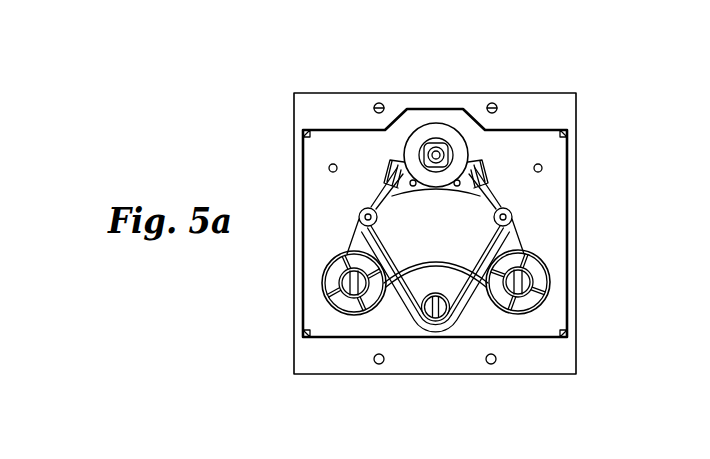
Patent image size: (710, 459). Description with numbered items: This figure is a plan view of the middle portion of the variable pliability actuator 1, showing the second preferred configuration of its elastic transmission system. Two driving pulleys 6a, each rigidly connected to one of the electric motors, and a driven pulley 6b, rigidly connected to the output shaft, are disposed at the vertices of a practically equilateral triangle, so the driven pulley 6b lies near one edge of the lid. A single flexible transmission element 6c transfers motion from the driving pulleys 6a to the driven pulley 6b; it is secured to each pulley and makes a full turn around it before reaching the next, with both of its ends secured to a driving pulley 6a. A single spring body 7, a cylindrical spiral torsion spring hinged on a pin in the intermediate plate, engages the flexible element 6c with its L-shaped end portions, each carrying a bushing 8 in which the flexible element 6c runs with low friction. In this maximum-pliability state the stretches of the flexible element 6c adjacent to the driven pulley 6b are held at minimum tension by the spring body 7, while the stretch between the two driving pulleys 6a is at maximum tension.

The variable pliability actuator 1 is at (597, 107).
The driving pulleys 6a is at (373, 310).
The driven pulley 6b is at (437, 147).
The flexible transmission element 6c is at (392, 192).
The spring body 7 is at (380, 263).
The bushing 8 is at (359, 221).